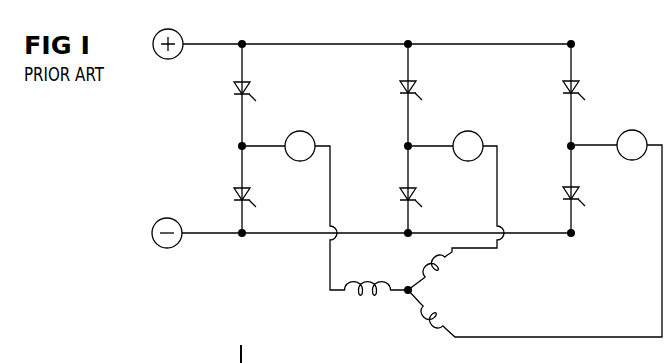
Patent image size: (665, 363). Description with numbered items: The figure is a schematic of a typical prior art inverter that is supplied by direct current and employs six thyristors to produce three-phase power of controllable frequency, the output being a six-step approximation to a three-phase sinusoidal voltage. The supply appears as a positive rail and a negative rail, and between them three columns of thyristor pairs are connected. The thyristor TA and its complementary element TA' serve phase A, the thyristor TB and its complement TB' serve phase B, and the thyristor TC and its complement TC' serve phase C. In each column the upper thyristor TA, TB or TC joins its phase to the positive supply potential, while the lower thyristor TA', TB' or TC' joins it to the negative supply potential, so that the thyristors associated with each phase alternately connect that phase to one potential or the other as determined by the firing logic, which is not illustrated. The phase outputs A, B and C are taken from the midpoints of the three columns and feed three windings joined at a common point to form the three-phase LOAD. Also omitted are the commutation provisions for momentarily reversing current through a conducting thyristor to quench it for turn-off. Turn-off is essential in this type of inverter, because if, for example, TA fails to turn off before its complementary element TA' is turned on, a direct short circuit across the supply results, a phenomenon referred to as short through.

The thyristor TA is at (257, 92).
The complementary thyristor TA' is at (266, 197).
The thyristor TB is at (426, 91).
The complementary thyristor TB' is at (429, 197).
The thyristor TC is at (589, 91).
The complementary thyristor TC' is at (592, 196).
The phase A is at (327, 213).
The phase B is at (456, 210).
The phase C is at (535, 233).
The load LOAD is at (505, 290).